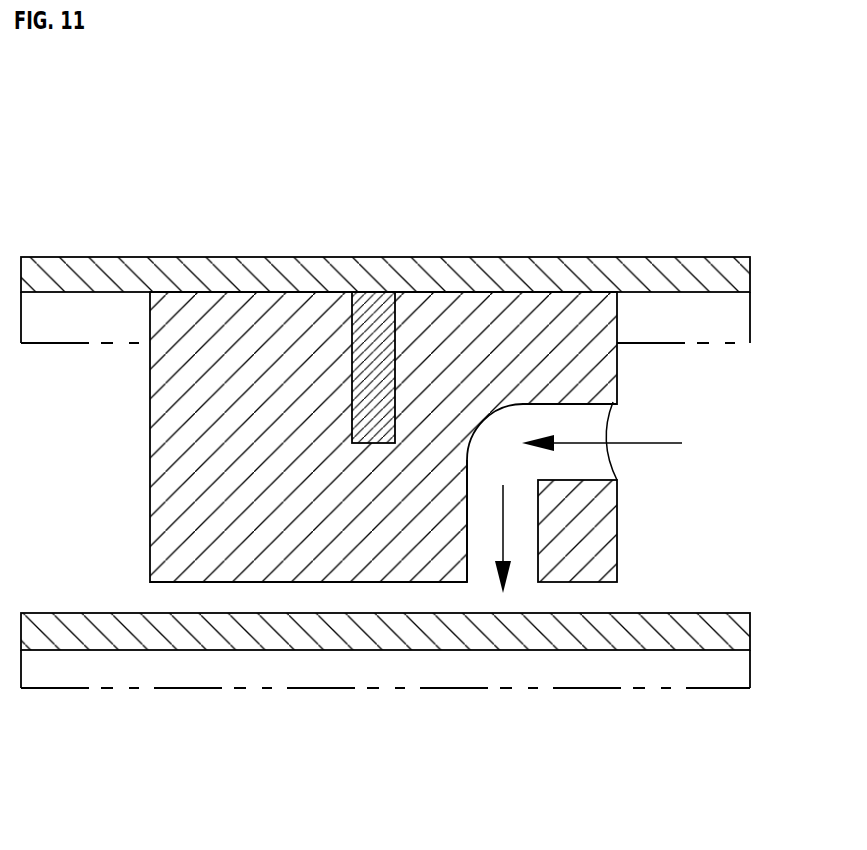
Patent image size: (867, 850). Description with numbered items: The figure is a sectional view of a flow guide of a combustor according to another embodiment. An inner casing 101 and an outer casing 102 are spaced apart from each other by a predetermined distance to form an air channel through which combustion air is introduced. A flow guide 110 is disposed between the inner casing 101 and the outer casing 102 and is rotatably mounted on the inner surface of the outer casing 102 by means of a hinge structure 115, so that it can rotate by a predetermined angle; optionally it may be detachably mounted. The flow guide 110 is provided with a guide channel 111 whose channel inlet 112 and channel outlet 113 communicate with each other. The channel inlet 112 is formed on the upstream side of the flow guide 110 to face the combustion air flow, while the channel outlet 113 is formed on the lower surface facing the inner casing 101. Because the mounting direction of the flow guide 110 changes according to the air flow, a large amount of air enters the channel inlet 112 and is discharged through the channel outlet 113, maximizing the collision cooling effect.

The inner casing 101 is at (712, 633).
The outer casing 102 is at (693, 268).
The flow guide 110 is at (240, 340).
The guide channel 111 is at (483, 491).
The channel inlet 112 is at (600, 457).
The channel outlet 113 is at (527, 563).
The hinge structure 115 is at (380, 380).